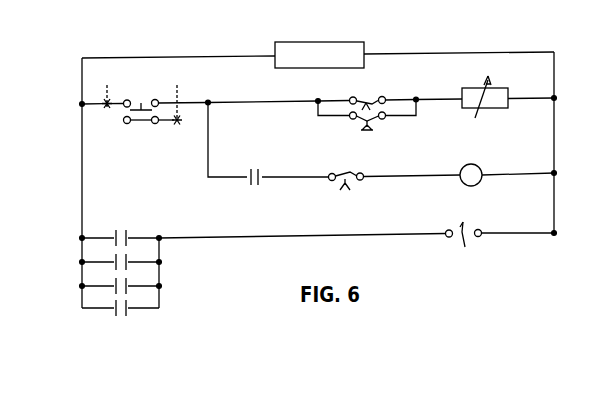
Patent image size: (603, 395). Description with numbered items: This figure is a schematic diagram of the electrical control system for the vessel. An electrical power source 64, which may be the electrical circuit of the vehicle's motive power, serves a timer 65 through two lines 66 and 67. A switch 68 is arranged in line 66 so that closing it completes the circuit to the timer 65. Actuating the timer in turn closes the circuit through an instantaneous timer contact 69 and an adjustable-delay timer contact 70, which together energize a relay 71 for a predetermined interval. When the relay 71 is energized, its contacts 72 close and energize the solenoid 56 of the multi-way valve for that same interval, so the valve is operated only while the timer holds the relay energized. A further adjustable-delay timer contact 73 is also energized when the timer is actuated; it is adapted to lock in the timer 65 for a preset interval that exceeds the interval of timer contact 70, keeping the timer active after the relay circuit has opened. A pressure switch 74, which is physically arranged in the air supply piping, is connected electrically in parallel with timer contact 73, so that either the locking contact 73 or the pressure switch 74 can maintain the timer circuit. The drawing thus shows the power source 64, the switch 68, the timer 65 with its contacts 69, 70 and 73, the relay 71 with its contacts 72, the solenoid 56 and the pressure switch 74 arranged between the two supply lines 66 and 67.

The solenoid 56 is at (468, 241).
The electrical power source 64 is at (318, 42).
The timer 65 is at (462, 88).
The line 66 is at (82, 77).
The line 67 is at (555, 70).
The switch 68 is at (141, 103).
The instantaneous timer contact 69 is at (256, 168).
The adjustable-delay timer contact 70 is at (361, 180).
The relay 71 is at (464, 184).
The relay contacts 72 is at (127, 233).
The adjustable-delay timer contact 73 is at (370, 97).
The pressure switch 74 is at (385, 119).